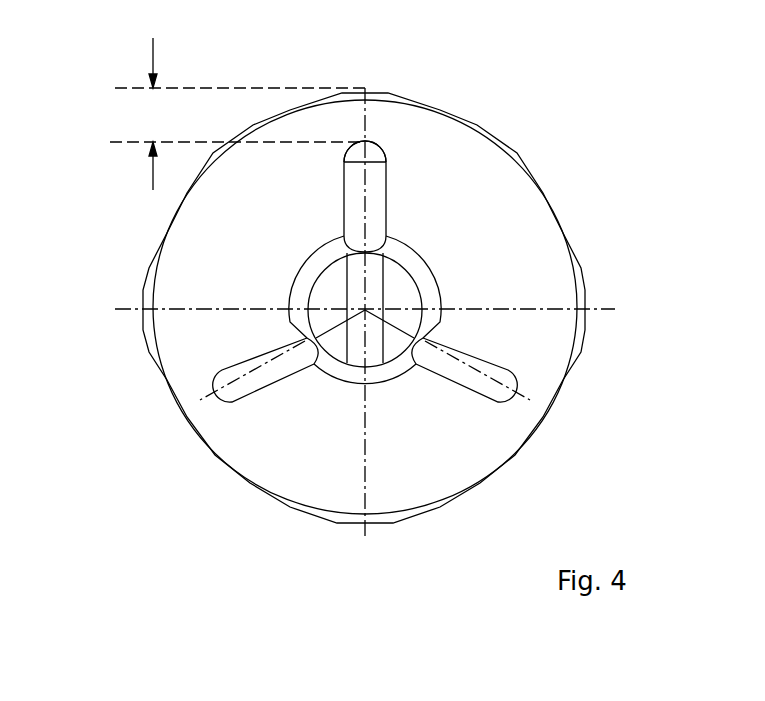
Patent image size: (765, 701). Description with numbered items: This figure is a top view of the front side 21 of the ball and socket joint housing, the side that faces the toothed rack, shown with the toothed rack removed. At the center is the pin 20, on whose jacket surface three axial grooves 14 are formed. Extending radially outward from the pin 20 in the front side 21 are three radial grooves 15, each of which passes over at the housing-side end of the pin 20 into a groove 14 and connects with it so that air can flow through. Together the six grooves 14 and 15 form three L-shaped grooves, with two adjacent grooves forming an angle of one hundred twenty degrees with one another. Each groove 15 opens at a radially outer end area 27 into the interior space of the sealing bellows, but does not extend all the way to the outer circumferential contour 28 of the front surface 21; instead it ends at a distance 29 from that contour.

The groove 14 is at (388, 217).
The groove 15 is at (378, 180).
The pin 20 is at (403, 292).
The front side 21 is at (400, 447).
The radially outer end area 27 is at (374, 150).
The outer circumferential contour 28 is at (164, 236).
The distance 29 is at (237, 112).